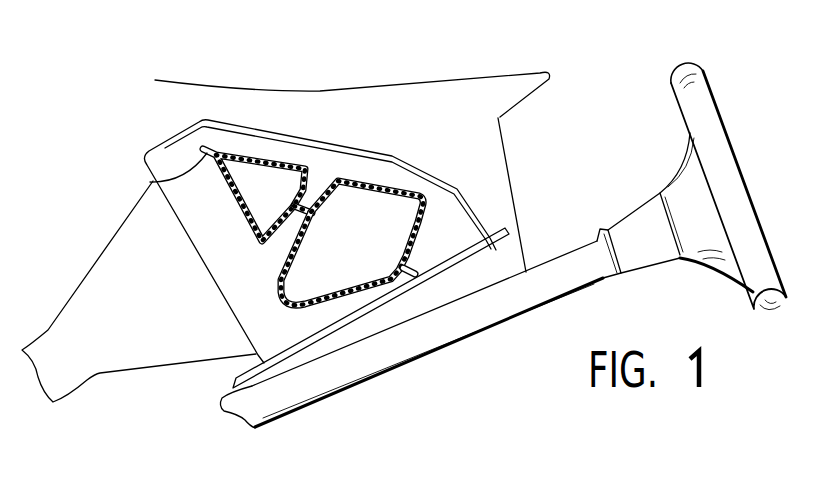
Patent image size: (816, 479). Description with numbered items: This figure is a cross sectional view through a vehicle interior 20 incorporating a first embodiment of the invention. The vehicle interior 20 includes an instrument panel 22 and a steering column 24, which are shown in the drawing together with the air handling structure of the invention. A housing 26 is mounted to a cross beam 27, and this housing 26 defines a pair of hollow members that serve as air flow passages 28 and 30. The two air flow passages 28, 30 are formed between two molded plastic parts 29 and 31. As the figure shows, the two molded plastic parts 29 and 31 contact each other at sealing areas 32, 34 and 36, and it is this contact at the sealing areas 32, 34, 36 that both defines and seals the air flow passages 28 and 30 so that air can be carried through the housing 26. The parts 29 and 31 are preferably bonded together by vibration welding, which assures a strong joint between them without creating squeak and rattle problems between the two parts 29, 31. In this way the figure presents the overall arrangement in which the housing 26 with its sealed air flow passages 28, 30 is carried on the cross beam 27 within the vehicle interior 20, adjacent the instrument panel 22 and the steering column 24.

The vehicle interior 20 is at (323, 70).
The instrument panel 22 is at (440, 78).
The steering column 24 is at (492, 318).
The housing 26 is at (411, 297).
The cross beam 27 is at (267, 138).
The air flow passage 28 is at (282, 197).
The molded plastic part 29 is at (243, 220).
The air flow passage 30 is at (360, 266).
The molded plastic part 31 is at (295, 165).
The sealing area 32 is at (290, 248).
The sealing area 34 is at (150, 182).
The sealing area 36 is at (416, 266).